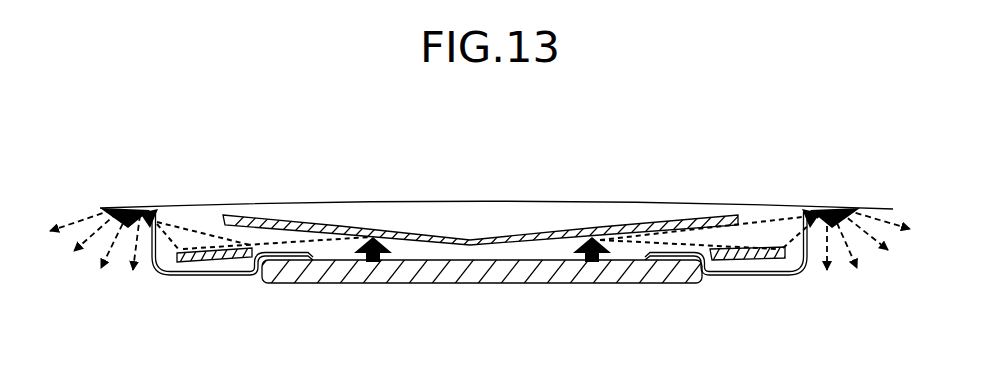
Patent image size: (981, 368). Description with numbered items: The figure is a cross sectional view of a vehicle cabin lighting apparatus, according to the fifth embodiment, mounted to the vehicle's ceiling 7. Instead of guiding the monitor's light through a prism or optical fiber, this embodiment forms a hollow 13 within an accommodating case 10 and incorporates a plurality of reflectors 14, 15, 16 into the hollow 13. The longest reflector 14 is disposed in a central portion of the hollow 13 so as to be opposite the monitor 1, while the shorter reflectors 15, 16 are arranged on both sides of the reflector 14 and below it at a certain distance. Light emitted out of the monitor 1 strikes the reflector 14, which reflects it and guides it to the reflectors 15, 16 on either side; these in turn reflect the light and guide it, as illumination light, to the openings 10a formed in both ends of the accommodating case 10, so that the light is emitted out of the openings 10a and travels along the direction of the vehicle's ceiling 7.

The monitor 1 is at (468, 283).
The vehicle's ceiling 7 is at (415, 200).
The accommodating case 10 is at (243, 275).
The openings 10a is at (157, 210).
The hollow 13 is at (517, 212).
The reflector 14 is at (333, 224).
The reflector 15 is at (200, 262).
The reflector 16 is at (737, 262).